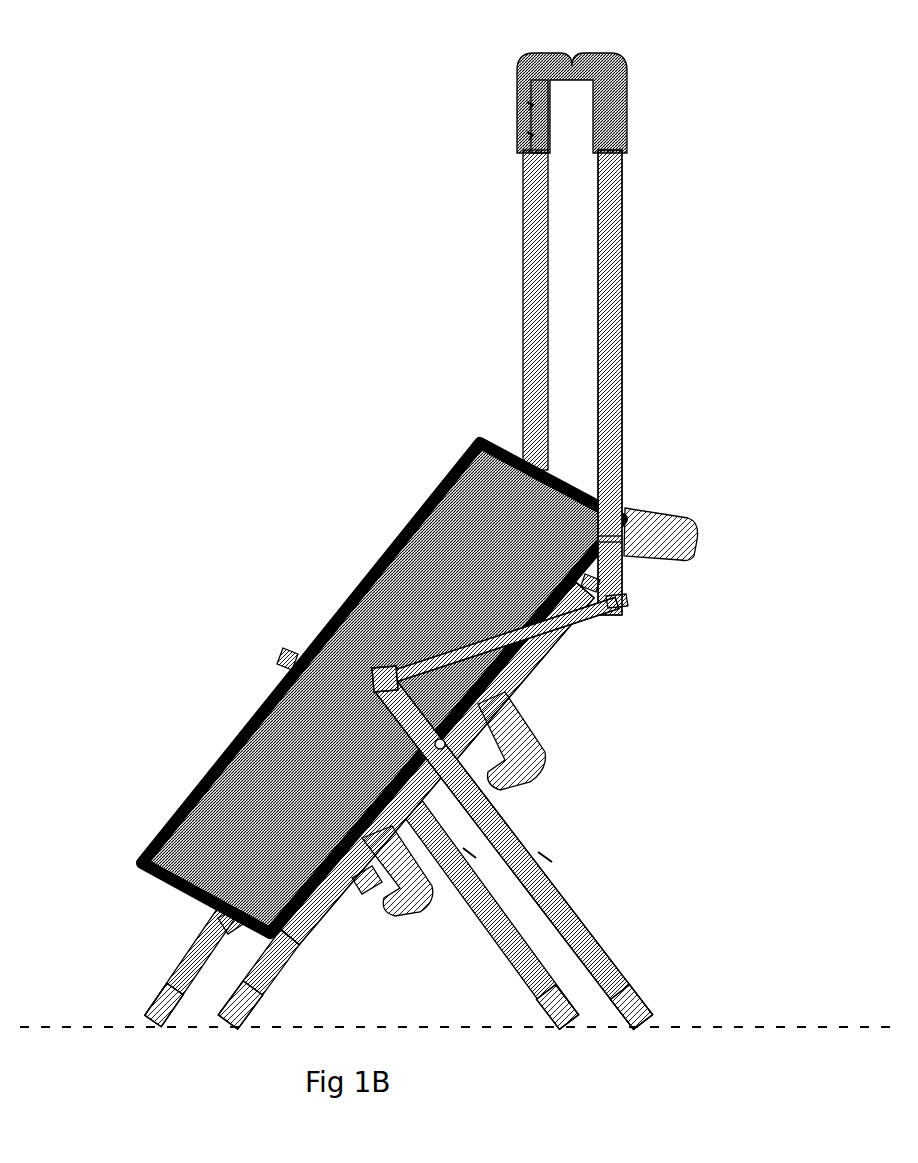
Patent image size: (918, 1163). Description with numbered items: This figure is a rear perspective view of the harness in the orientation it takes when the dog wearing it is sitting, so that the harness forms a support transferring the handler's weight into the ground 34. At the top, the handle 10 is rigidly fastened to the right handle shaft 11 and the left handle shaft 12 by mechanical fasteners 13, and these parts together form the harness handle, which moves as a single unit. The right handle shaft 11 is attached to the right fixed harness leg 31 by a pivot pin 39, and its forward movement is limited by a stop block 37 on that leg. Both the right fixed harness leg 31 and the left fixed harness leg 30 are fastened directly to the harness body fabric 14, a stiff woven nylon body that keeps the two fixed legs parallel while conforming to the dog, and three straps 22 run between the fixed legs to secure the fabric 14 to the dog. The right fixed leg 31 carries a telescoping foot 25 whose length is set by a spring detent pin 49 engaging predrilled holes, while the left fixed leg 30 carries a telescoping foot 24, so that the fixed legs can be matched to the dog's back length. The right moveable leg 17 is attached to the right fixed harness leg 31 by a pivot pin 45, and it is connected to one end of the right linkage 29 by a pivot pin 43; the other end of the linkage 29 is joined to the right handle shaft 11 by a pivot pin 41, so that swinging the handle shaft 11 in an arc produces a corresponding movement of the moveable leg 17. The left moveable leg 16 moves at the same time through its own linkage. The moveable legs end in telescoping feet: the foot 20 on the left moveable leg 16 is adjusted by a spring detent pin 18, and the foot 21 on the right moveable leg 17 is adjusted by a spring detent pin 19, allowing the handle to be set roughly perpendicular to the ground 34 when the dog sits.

The handle 10 is at (612, 65).
The right handle shaft 11 is at (613, 240).
The left handle shaft 12 is at (533, 243).
The mechanical fastener 13 is at (527, 105).
The harness body fabric 14 is at (470, 525).
The left moveable leg 16 is at (490, 915).
The right moveable leg 17 is at (575, 912).
The spring detent pin 18 is at (470, 850).
The spring detent pin 19 is at (545, 855).
The telescoping foot 20 is at (555, 990).
The telescoping foot 21 is at (645, 995).
The strap 22 is at (652, 523).
The telescoping foot 24 is at (178, 985).
The telescoping foot 25 is at (235, 1005).
The right linkage 29 is at (563, 633).
The left fixed harness leg 30 is at (225, 932).
The right fixed harness leg 31 is at (315, 905).
The ground 34 is at (800, 1025).
The stop block 37 is at (596, 580).
The pivot pin 39 is at (606, 538).
The pivot pin 41 is at (617, 600).
The pivot pin 43 is at (385, 683).
The pivot pin 45 is at (440, 745).
The spring detent pin 49 is at (365, 890).